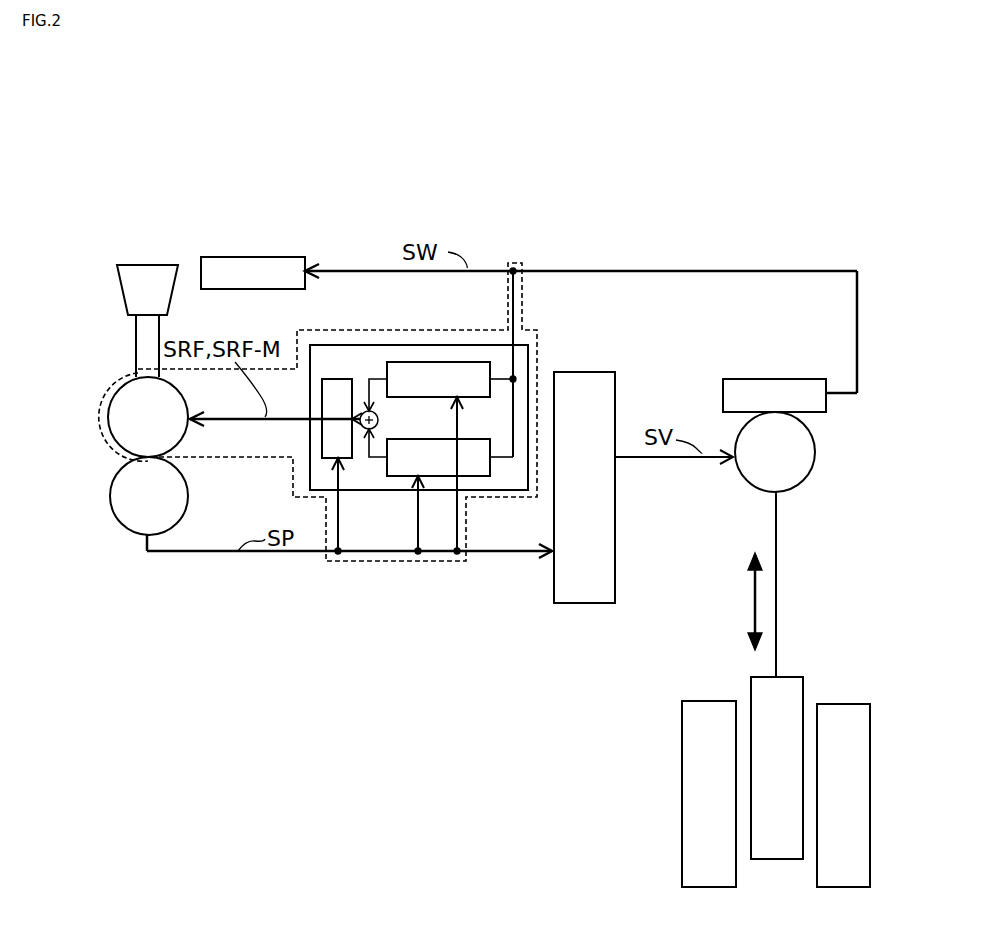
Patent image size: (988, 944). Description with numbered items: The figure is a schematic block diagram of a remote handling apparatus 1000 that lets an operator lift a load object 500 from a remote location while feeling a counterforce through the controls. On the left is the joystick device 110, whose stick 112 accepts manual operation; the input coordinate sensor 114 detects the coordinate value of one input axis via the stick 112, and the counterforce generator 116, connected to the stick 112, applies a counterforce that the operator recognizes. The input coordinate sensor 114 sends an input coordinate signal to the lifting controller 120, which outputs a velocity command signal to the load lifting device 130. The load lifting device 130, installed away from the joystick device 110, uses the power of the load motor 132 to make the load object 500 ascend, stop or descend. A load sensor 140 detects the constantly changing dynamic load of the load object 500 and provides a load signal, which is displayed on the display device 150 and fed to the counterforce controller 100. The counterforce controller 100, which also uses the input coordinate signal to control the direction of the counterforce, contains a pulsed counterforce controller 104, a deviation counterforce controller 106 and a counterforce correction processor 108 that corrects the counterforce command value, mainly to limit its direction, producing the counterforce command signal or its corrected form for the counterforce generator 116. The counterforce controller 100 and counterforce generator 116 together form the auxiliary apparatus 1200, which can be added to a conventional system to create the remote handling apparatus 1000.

The remote handling apparatus 1000 is at (227, 88).
The joystick device 110 is at (107, 323).
The stick 112 is at (147, 290).
The counterforce generator 116 is at (123, 402).
The input coordinate sensor 114 is at (124, 505).
The display device 150 is at (265, 265).
The counterforce controller 100 is at (412, 345).
The counterforce correction processor 108 is at (360, 362).
The pulsed counterforce controller 104 is at (450, 379).
The deviation counterforce controller 106 is at (450, 457).
The auxiliary apparatus 1200 is at (262, 458).
The lifting controller 120 is at (600, 394).
The load sensor 140 is at (773, 378).
The load lifting device 130 is at (845, 443).
The load motor 132 is at (743, 478).
The load object 500 is at (750, 676).